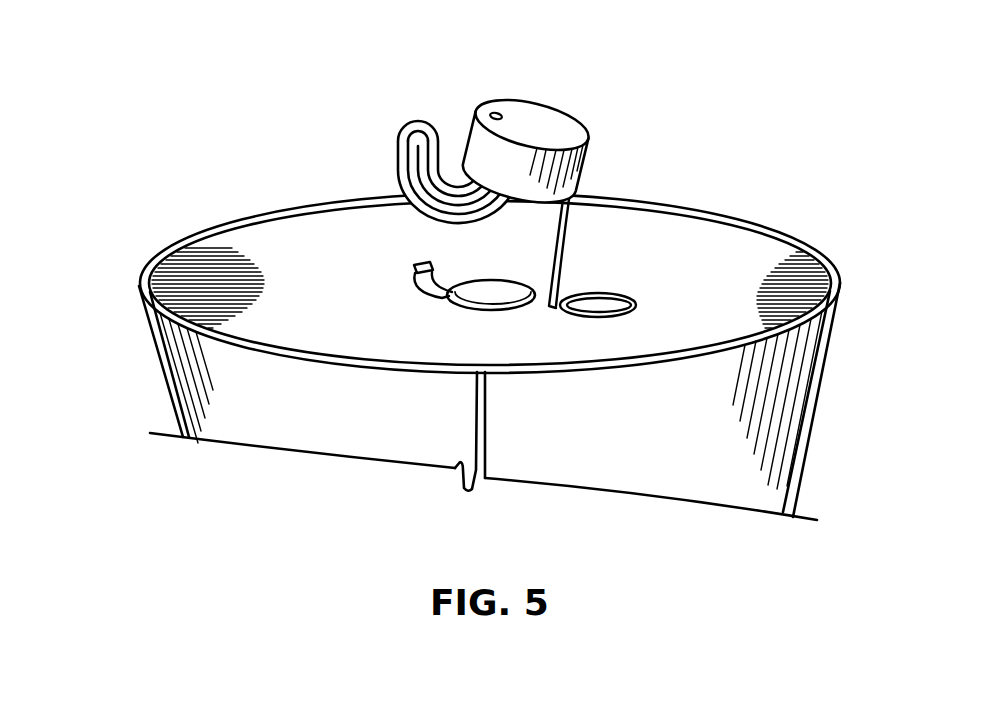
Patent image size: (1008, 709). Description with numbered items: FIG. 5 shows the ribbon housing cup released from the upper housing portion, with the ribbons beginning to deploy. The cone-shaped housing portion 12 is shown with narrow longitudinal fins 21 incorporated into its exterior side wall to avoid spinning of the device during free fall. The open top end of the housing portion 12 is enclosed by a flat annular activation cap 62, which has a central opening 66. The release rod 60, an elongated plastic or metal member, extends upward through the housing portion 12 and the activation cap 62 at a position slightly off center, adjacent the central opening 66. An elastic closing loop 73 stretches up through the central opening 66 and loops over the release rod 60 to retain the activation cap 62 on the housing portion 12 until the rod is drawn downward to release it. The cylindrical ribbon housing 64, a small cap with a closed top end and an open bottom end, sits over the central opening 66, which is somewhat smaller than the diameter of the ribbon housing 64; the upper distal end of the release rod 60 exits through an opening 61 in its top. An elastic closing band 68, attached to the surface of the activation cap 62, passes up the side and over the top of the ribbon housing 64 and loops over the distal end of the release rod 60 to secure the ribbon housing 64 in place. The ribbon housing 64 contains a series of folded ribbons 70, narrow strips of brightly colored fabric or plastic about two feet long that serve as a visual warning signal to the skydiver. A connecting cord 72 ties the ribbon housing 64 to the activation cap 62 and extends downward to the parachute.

The housing portion 12 is at (623, 440).
The longitudinal fins 21 is at (487, 407).
The release rod 60 is at (418, 268).
The opening in ribbon housing 61 is at (499, 112).
The activation cap 62 is at (303, 257).
The ribbon housing 64 is at (537, 127).
The central opening 66 is at (484, 297).
The elastic closing band 68 is at (625, 298).
The folded ribbons 70 is at (422, 123).
The connecting cord 72 is at (568, 250).
The closing loop 73 is at (432, 298).